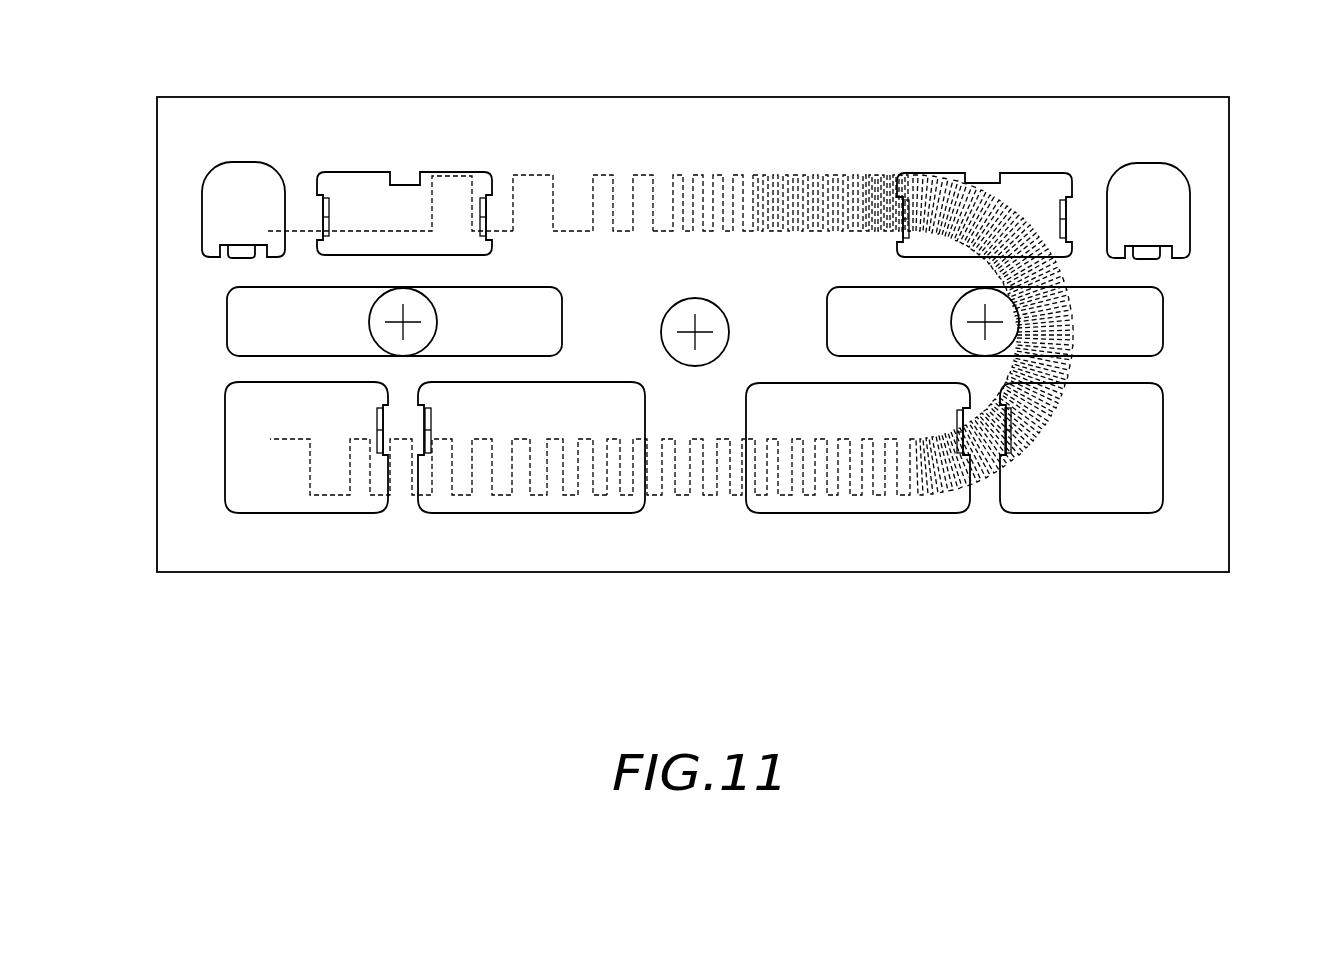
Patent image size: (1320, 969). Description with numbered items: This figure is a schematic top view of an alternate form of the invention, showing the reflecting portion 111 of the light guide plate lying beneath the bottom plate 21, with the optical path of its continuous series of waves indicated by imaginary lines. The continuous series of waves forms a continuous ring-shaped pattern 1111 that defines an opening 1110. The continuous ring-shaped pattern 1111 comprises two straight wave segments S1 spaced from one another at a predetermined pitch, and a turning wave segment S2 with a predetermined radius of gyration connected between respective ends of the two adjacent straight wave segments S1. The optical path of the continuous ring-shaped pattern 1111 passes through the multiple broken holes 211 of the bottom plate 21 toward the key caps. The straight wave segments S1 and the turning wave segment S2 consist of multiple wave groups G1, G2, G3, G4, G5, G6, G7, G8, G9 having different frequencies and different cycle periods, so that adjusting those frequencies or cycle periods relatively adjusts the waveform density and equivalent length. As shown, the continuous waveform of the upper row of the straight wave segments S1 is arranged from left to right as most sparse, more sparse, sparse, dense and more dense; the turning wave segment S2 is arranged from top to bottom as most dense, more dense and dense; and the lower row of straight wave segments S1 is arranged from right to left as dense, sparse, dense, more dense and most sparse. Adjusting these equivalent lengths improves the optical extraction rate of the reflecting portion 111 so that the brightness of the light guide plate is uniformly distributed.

The bottom plate 21 is at (1207, 347).
The broken holes 211 is at (1122, 384).
The reflecting portion 111 is at (730, 138).
The opening 1110 is at (310, 230).
The continuous ring-shaped pattern 1111 is at (1012, 344).
The wave group G1 is at (441, 170).
The wave group G2 is at (599, 171).
The wave group G3 is at (681, 171).
The wave group G4 is at (796, 171).
The wave group G5 is at (896, 171).
The wave group G6 is at (1026, 207).
The wave group G7 is at (1031, 459).
The wave group G8 is at (656, 433).
The wave group G9 is at (551, 433).
The straight wave segments S1 is at (918, 520).
The turning wave segment S2 is at (1090, 178).